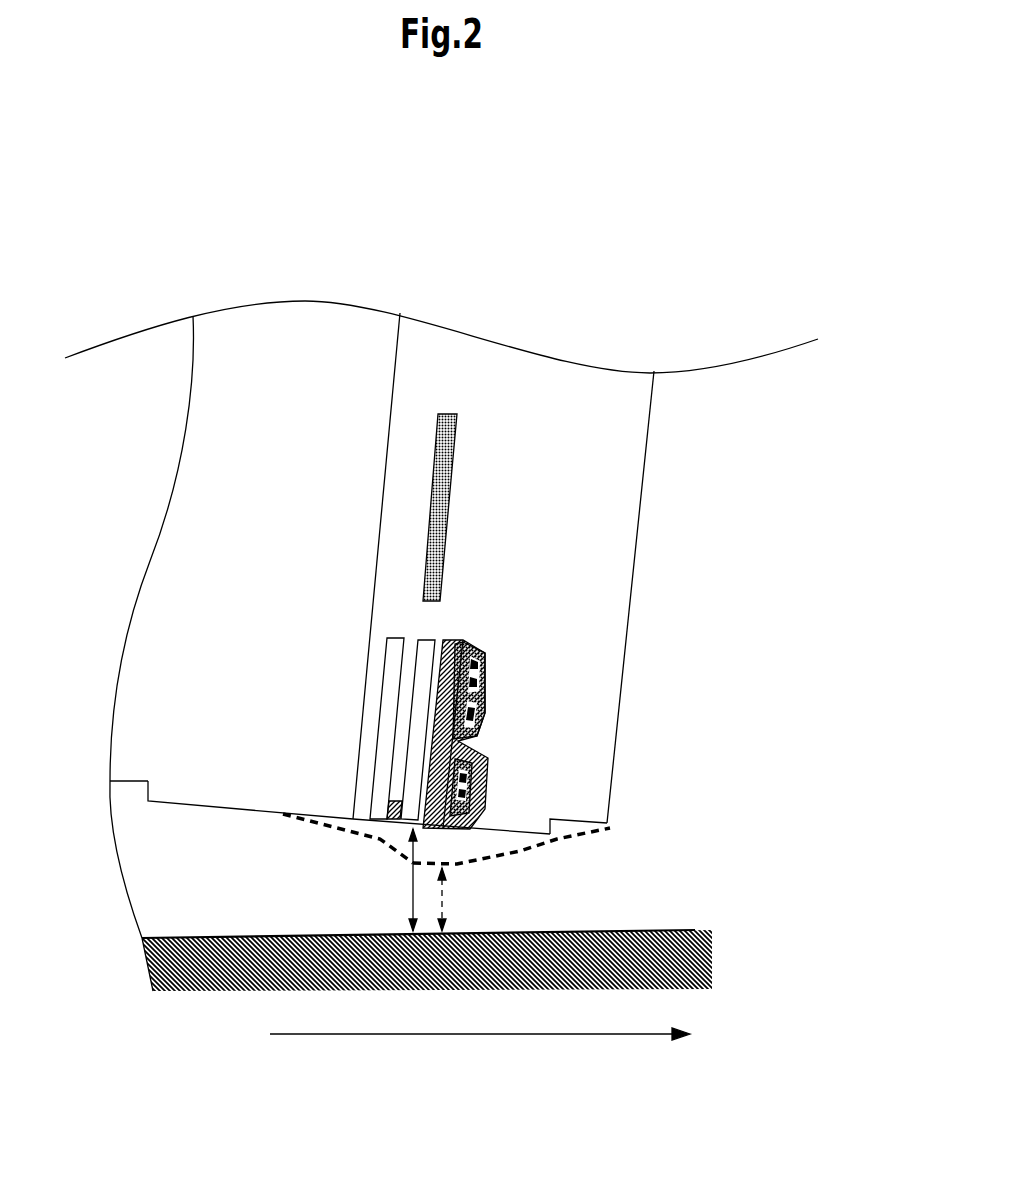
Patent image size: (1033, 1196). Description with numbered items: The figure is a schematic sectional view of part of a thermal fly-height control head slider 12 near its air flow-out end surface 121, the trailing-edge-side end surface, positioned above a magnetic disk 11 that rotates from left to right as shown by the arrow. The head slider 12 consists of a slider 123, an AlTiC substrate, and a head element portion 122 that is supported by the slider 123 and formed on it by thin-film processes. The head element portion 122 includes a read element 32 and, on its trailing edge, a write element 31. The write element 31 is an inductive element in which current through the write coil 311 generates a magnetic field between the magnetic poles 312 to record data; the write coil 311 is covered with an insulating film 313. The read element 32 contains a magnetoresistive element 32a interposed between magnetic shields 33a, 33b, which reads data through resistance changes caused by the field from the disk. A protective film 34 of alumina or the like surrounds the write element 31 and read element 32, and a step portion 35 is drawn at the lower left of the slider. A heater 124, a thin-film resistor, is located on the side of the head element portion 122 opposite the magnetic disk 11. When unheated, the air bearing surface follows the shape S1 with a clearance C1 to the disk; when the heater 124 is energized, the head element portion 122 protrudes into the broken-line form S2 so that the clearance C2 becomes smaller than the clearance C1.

The magnetic disk 11 is at (637, 930).
The head slider 12 is at (540, 290).
The air flow-out end surface 121 is at (646, 458).
The head element portion 122 is at (690, 600).
The slider 123 is at (117, 782).
The heater 124 is at (449, 500).
The write element 31 is at (587, 734).
The write coil 311 is at (492, 652).
The magnetic poles 312 is at (483, 782).
The insulating film 313 is at (487, 698).
The read element 32 is at (380, 827).
The magnetoresistive element 32a is at (392, 828).
The magnetic shield 33a is at (425, 638).
The magnetic shield 33b is at (388, 647).
The protective film 34 is at (407, 402).
The step portion 35 is at (185, 803).
The ABS shape when not heated S1 is at (335, 820).
The protruded form S2 is at (520, 860).
The clearance C1 is at (404, 880).
The clearance C2 is at (456, 899).